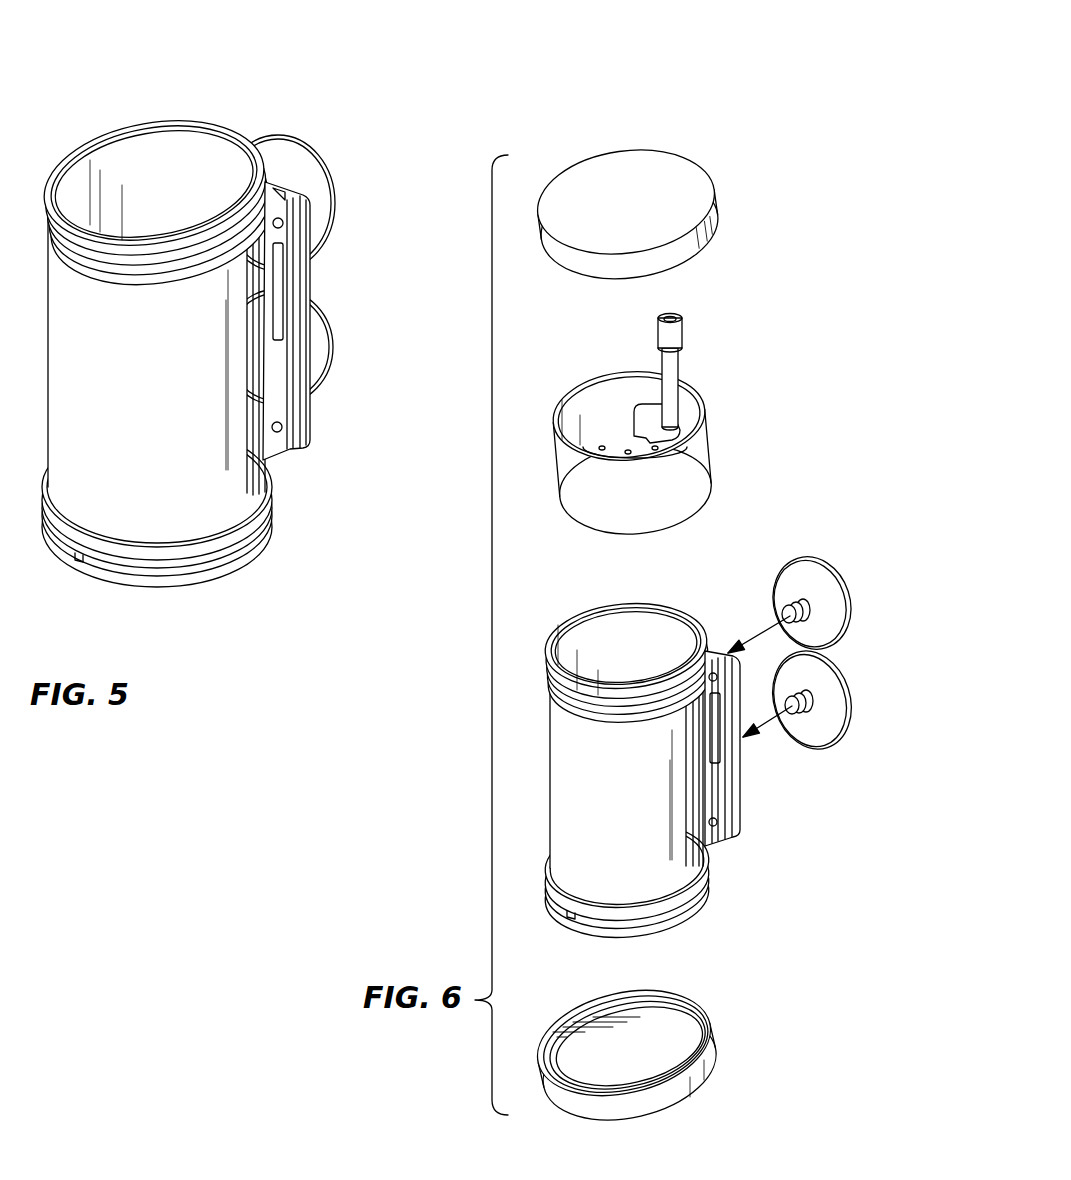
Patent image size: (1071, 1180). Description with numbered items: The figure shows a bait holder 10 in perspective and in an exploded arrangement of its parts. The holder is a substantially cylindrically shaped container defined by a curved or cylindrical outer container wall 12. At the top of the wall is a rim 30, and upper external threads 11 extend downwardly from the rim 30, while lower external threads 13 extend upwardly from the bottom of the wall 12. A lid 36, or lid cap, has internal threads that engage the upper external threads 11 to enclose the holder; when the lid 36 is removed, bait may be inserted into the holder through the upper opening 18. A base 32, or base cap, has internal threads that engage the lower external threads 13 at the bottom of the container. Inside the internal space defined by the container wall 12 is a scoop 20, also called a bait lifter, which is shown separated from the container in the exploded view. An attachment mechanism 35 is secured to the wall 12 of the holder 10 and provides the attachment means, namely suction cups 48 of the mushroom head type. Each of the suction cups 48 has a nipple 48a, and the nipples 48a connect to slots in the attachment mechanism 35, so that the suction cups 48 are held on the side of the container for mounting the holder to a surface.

In FIG. 5, the bait holder 10 is at (327, 120).
In FIG. 6, the upper external threads 11 is at (547, 657).
In FIG. 6, the outer container wall 12 is at (675, 803).
In FIG. 6, the lower external threads 13 is at (697, 902).
In FIG. 6, the upper opening 18 is at (632, 645).
In FIG. 6, the scoop 20 is at (707, 398).
In FIG. 6, the rim 30 is at (622, 639).
In FIG. 6, the base 32 is at (697, 1073).
In FIG. 6, the attachment mechanism 35 is at (708, 782).
In FIG. 6, the lid 36 is at (690, 195).
In FIG. 6, the suction cups 48 is at (802, 652).
In FIG. 6, the nipples 48a is at (785, 612).